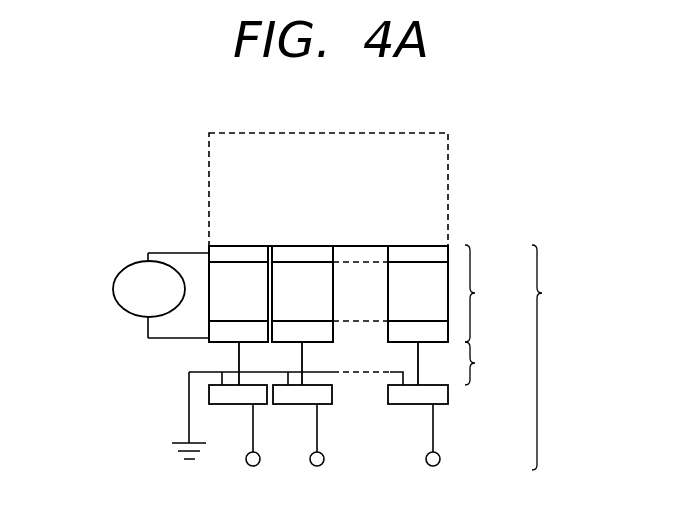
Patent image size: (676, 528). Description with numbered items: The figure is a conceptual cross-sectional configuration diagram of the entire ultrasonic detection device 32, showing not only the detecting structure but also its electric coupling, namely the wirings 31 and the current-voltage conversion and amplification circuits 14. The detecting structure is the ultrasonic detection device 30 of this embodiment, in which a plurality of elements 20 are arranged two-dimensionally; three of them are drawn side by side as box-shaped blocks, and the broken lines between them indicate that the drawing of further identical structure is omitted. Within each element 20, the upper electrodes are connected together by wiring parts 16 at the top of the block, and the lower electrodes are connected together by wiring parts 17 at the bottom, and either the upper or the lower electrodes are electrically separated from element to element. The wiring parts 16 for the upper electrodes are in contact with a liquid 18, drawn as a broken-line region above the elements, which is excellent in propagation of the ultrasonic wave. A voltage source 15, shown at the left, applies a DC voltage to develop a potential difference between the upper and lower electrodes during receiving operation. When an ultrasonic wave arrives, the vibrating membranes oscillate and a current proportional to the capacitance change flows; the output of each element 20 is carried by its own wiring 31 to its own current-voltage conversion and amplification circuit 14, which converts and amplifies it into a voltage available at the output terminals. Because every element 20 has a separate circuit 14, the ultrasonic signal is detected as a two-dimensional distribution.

The current-voltage conversion and amplification circuit 14 is at (411, 400).
The voltage source 15 is at (125, 287).
The wiring parts 16 is at (290, 250).
The wiring parts 17 is at (290, 337).
The liquid 18 is at (448, 155).
The element 20 is at (413, 275).
The ultrasonic detection device 30 is at (486, 293).
The wiring 31 is at (486, 363).
The ultrasonic detection device 32 is at (552, 357).